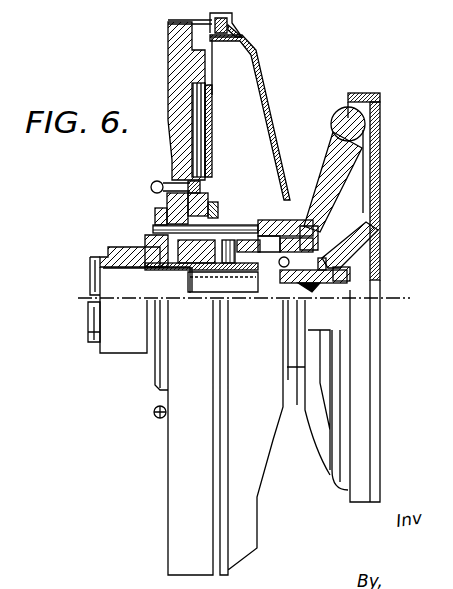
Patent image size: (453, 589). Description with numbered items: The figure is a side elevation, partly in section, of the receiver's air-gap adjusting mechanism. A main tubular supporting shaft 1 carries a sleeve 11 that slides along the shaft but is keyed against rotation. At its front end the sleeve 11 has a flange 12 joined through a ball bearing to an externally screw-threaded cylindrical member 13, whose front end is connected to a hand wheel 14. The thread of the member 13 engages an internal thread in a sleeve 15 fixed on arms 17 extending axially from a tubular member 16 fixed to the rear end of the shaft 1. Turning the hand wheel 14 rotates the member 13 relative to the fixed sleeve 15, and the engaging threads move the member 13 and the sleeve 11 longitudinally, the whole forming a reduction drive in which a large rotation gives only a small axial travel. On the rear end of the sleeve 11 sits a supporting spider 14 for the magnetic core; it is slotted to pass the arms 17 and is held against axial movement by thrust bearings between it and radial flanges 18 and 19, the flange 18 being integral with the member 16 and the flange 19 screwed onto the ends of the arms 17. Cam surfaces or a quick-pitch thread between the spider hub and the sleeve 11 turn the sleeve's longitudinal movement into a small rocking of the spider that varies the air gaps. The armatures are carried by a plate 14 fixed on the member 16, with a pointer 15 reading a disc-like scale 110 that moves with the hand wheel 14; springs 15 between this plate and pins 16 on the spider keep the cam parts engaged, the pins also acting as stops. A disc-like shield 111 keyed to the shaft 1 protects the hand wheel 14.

The main tubular supporting shaft 1 is at (115, 346).
The sleeve 11 is at (170, 270).
The flange 12 is at (310, 288).
The externally screw-threaded cylindrical member 13 is at (336, 244).
The hand wheel 14 is at (184, 60).
The internally screw-threaded sleeve 15 is at (243, 27).
The tubular member 16 is at (174, 184).
The arms 17 is at (226, 218).
The radial flange 18 is at (165, 200).
The radial flange 19 is at (206, 210).
The disc-like scale 110 is at (256, 86).
The disc-like shield 111 is at (379, 164).